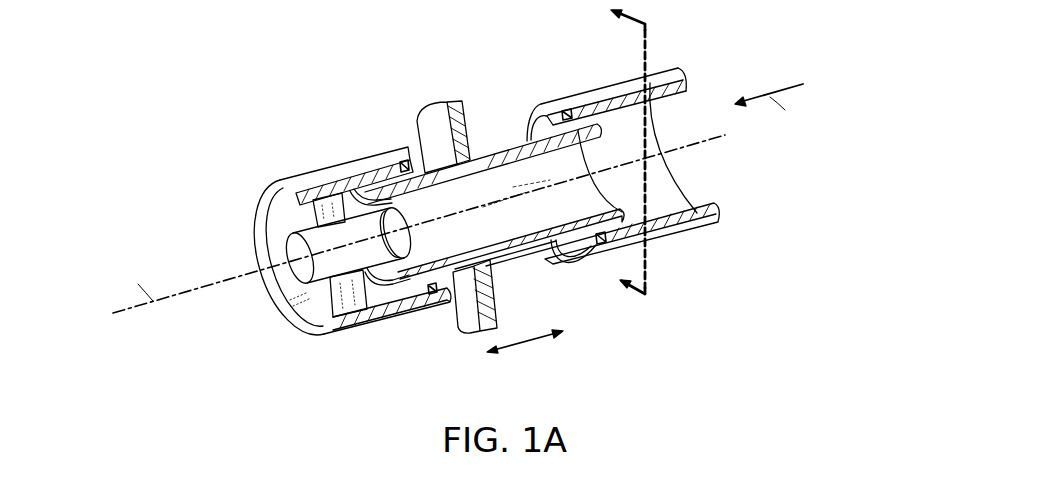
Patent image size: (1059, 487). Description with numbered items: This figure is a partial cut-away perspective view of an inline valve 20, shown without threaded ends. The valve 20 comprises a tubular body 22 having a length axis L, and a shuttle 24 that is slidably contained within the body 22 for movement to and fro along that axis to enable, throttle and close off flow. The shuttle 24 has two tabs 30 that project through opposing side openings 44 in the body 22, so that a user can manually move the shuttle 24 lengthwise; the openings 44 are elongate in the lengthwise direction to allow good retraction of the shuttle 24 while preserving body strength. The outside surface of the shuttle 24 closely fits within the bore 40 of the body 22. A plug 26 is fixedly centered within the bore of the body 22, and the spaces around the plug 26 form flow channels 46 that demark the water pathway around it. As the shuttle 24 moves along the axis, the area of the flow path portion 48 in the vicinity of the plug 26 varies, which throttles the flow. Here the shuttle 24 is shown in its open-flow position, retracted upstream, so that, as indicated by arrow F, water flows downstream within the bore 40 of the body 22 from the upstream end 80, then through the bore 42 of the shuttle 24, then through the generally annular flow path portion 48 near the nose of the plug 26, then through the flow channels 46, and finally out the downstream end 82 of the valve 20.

The valve 20 is at (682, 292).
The tubular body 22 is at (266, 182).
The shuttle 24 is at (507, 247).
The plug 26 is at (358, 262).
The tabs 30 is at (428, 120).
The bore 40 is at (657, 182).
The bore of shuttle 42 is at (498, 153).
The side openings 44 is at (533, 113).
The flow channels 46 is at (317, 307).
The flow path portion 48 is at (358, 192).
The upstream end 80 is at (688, 87).
The downstream end 82 is at (284, 303).